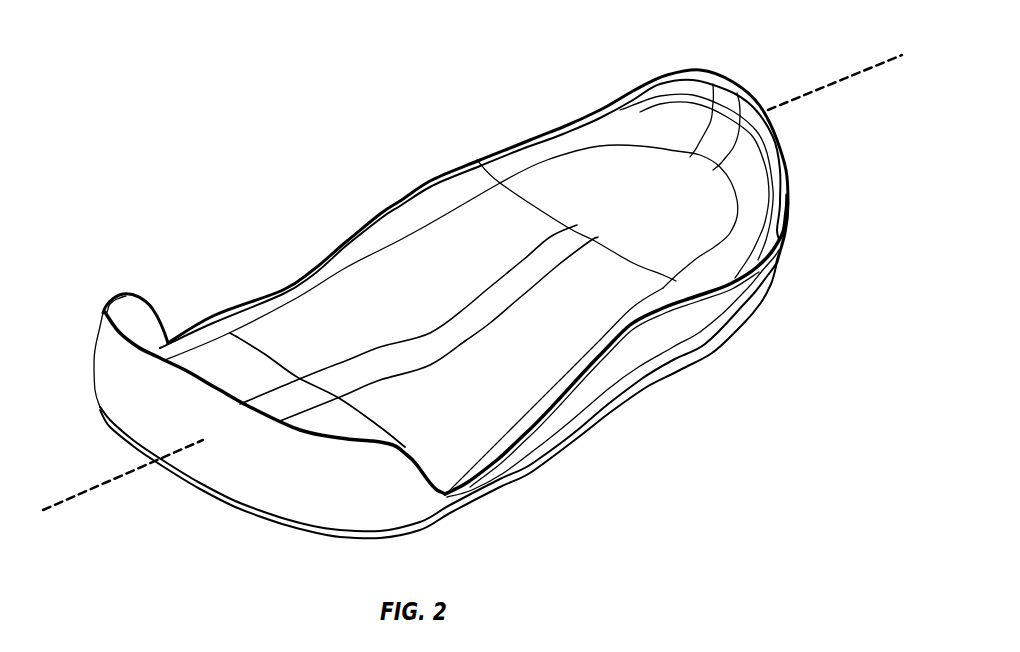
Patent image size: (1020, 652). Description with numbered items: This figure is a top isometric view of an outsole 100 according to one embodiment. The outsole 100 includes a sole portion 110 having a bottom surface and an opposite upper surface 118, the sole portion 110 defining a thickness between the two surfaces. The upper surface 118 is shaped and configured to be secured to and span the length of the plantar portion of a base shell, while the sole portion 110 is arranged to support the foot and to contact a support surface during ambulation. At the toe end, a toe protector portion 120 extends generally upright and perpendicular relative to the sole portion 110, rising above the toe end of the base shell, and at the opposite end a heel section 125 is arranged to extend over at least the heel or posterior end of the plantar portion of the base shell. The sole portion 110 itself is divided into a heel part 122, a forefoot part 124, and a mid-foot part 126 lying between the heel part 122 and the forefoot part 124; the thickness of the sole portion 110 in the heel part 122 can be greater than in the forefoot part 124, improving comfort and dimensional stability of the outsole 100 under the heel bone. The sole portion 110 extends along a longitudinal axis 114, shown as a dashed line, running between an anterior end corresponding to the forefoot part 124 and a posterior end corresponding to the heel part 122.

The outsole 100 is at (256, 161).
The sole portion 110 is at (604, 412).
The longitudinal axis 114 is at (853, 78).
The upper surface 118 is at (643, 233).
The toe protector portion 120 is at (122, 365).
The heel part 122 is at (587, 167).
The forefoot part 124 is at (227, 360).
The heel section 125 is at (692, 92).
The mid-foot part 126 is at (408, 260).